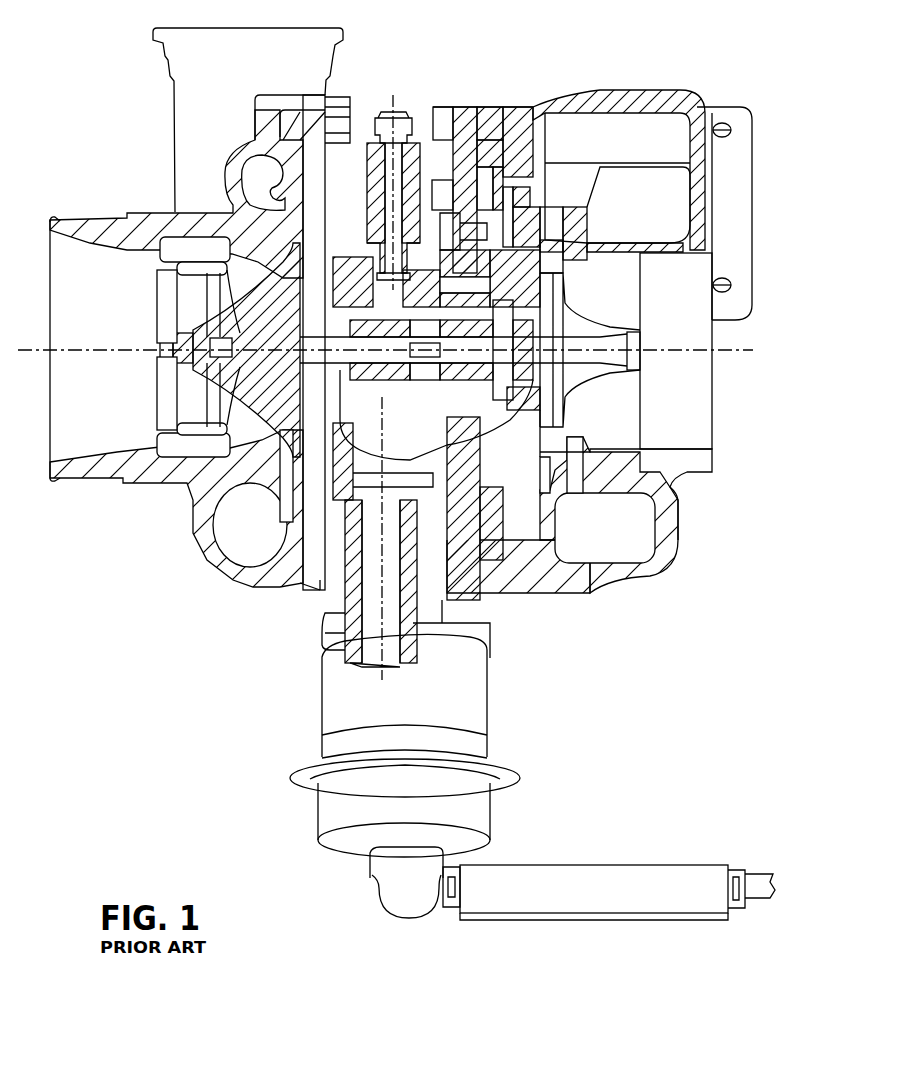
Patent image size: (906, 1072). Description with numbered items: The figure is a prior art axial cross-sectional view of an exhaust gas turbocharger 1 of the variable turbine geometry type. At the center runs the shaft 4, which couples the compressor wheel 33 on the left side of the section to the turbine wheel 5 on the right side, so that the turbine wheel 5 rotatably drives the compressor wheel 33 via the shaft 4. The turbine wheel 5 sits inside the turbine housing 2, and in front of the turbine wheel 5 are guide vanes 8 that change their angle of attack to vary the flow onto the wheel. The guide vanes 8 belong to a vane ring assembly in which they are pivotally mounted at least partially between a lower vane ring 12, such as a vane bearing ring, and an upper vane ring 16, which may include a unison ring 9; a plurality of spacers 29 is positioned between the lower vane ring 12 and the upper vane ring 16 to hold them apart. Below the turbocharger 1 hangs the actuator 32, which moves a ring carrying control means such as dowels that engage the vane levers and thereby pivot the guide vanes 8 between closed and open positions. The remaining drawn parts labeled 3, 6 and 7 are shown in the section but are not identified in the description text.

The turbocharger 1 is at (153, 634).
The turbine housing 2 is at (530, 113).
The bearing housing 3 is at (460, 137).
The shaft 4 is at (380, 372).
The turbine wheel 5 is at (585, 331).
The outlet passage of turbine housing 6 is at (644, 543).
The heat shield 7 is at (580, 207).
The guide vanes 8 is at (578, 242).
The unison ring 9 is at (487, 157).
The lower vane ring 12 is at (540, 243).
The upper vane ring 16 is at (600, 137).
The spacers 29 is at (548, 470).
The actuator 32 is at (330, 692).
The compressor wheel 33 is at (168, 305).